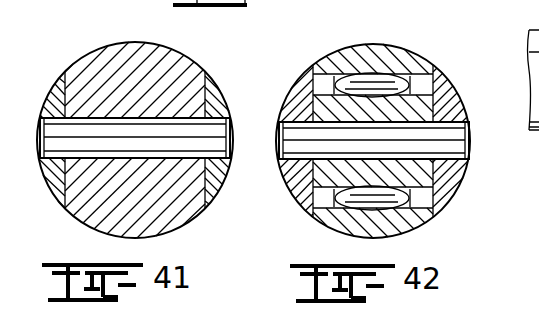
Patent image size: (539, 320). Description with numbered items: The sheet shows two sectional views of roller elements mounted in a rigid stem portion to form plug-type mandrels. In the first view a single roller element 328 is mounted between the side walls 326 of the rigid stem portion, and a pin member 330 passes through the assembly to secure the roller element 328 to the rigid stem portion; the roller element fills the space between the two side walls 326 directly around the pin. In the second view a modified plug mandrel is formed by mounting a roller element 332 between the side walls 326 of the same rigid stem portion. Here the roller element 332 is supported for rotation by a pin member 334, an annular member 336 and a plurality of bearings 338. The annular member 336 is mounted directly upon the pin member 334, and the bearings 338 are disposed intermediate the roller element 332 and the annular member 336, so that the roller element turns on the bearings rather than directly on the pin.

In FIG. 41, the side walls 326 is at (58, 83).
In FIG. 42, the side walls 326 is at (455, 93).
In FIG. 41, the roller element 328 is at (134, 44).
In FIG. 41, the pin member 330 is at (216, 128).
In FIG. 42, the roller element 332 is at (404, 52).
In FIG. 42, the pin member 334 is at (462, 150).
In FIG. 42, the annular member 336 is at (428, 110).
In FIG. 42, the bearings 338 is at (364, 76).